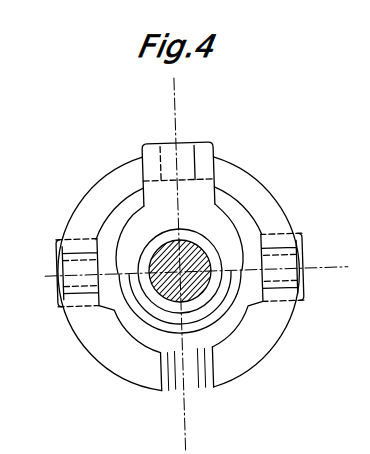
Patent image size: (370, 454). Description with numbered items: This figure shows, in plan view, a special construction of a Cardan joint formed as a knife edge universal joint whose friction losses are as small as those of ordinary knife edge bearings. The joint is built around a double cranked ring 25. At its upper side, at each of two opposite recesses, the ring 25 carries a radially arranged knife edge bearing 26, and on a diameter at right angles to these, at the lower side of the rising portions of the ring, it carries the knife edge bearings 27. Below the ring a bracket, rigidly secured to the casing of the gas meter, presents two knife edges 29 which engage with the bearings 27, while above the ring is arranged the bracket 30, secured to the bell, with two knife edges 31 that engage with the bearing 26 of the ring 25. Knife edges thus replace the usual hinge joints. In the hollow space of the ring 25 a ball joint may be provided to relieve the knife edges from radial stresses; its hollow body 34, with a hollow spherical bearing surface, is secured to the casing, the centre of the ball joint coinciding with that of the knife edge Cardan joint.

The double cranked ring 25 is at (255, 353).
The knife edge bearing 26 is at (192, 388).
The knife edge bearings 27 is at (65, 243).
The knife edges 29 is at (60, 282).
The bracket 30 is at (213, 226).
The knife edges 31 is at (185, 157).
The hollow body 34 is at (369, 316).